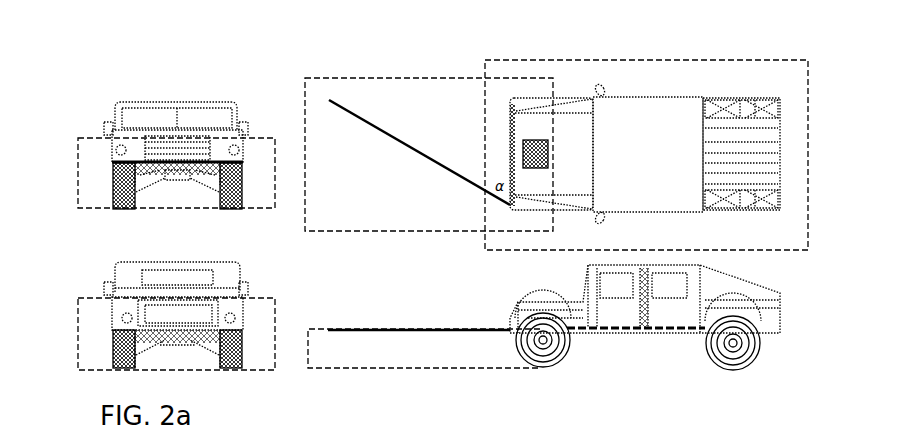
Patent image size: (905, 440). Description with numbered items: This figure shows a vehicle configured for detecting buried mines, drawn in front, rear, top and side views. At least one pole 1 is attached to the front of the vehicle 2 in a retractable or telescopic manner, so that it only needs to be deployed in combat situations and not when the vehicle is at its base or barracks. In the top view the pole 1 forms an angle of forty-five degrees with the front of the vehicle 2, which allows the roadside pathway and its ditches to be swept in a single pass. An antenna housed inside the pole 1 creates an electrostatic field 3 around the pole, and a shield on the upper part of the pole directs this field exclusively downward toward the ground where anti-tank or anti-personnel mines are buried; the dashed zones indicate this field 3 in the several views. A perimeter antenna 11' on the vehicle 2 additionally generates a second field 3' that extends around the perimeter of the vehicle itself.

The pole 1 is at (418, 158).
The vehicle 2 is at (737, 278).
The electrostatic field 3 is at (284, 216).
The second field 3' is at (646, 129).
The perimeter antenna 11' is at (636, 360).